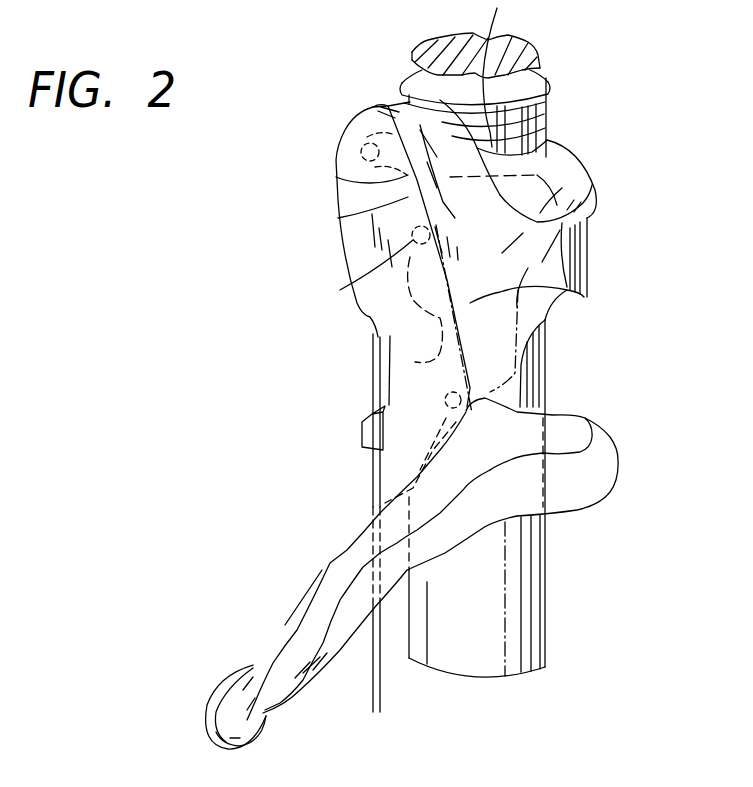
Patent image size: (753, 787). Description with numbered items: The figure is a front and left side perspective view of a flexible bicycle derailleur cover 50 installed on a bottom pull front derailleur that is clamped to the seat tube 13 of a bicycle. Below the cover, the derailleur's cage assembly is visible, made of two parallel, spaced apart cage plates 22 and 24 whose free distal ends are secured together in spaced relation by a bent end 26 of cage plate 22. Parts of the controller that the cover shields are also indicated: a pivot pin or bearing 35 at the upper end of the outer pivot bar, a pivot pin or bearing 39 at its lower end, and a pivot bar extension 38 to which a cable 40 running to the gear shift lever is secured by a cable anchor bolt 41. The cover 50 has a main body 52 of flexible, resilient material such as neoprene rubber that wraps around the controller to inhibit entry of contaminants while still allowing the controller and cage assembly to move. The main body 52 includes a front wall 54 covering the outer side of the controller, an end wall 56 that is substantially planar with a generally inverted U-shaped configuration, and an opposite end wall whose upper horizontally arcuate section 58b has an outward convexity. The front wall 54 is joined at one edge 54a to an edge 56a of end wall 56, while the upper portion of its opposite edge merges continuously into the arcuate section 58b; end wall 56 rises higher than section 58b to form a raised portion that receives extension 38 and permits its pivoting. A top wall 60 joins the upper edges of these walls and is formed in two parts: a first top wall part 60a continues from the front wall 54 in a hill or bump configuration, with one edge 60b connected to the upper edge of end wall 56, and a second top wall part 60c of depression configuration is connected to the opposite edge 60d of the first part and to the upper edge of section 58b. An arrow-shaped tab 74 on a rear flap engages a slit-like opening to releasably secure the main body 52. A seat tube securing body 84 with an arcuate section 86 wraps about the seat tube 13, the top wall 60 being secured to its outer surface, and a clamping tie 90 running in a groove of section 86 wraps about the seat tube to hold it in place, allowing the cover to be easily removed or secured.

The seat tube 13 is at (470, 680).
The cage plate 22 is at (595, 477).
The cage plate 24 is at (280, 647).
The bent end 26 is at (208, 704).
The pivot pin or bearing 35 is at (340, 290).
The pivot bar extension 38 is at (336, 177).
The pivot pin or bearing 39 is at (450, 410).
The cable 40 is at (381, 706).
The cable anchor bolt 41 is at (363, 150).
The cover 50 is at (655, 88).
The main body 52 is at (620, 210).
The front wall 54 is at (587, 296).
The edge of front wall 54a is at (447, 280).
The end wall 56 is at (350, 243).
The edge of end wall 56a is at (338, 218).
The upper horizontally arcuate section 58b is at (583, 257).
The top wall 60 is at (395, 103).
The first top wall part 60a is at (437, 39).
The edge of first top wall part 60b is at (360, 114).
The second top wall part 60c is at (563, 167).
The opposite edge of first top wall part 60d is at (509, 73).
The tab 74 is at (362, 432).
The seat tube securing body 84 is at (554, 82).
The arcuate section 86 is at (520, 78).
The clamping tie 90 is at (543, 110).